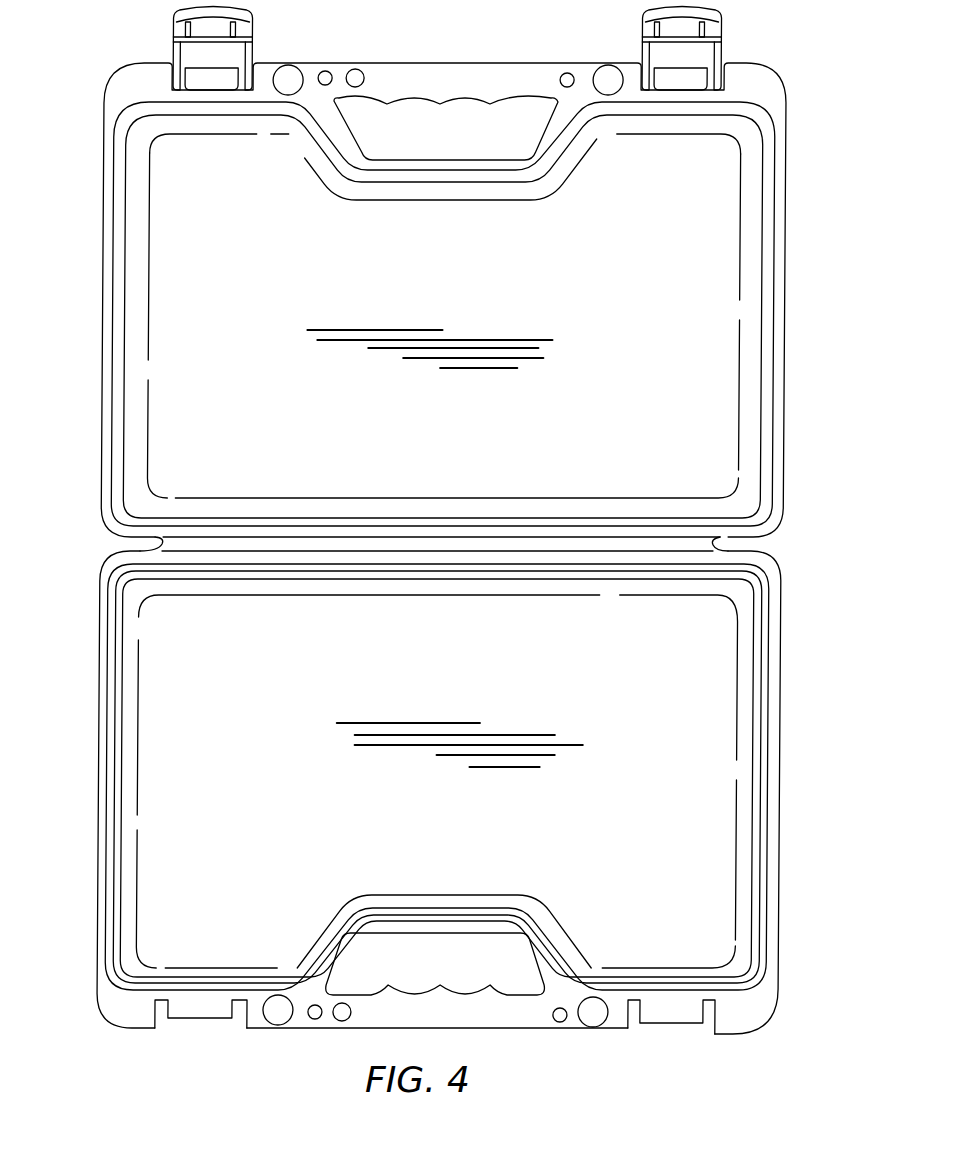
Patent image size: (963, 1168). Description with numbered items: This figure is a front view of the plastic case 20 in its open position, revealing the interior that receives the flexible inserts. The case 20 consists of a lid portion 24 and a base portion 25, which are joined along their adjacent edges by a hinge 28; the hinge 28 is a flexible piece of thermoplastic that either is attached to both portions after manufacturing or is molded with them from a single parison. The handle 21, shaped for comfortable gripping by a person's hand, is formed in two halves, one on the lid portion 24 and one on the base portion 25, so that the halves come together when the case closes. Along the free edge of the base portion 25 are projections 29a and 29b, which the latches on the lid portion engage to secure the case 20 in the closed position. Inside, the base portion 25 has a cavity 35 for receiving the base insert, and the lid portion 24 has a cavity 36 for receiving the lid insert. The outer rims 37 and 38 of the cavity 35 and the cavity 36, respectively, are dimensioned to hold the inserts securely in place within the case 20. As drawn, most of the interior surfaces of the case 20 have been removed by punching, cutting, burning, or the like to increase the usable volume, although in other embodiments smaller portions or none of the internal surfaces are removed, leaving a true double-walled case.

The case 20 is at (726, 1070).
The handle 21 is at (470, 165).
The lid portion 24 is at (748, 302).
The base portion 25 is at (750, 742).
The hinge 28 is at (603, 593).
The projection 29a is at (220, 1010).
The projection 29b is at (653, 1017).
The cavity 35 is at (312, 708).
The cavity 36 is at (297, 370).
The outer rim 37 is at (118, 846).
The outer rim 38 is at (125, 292).